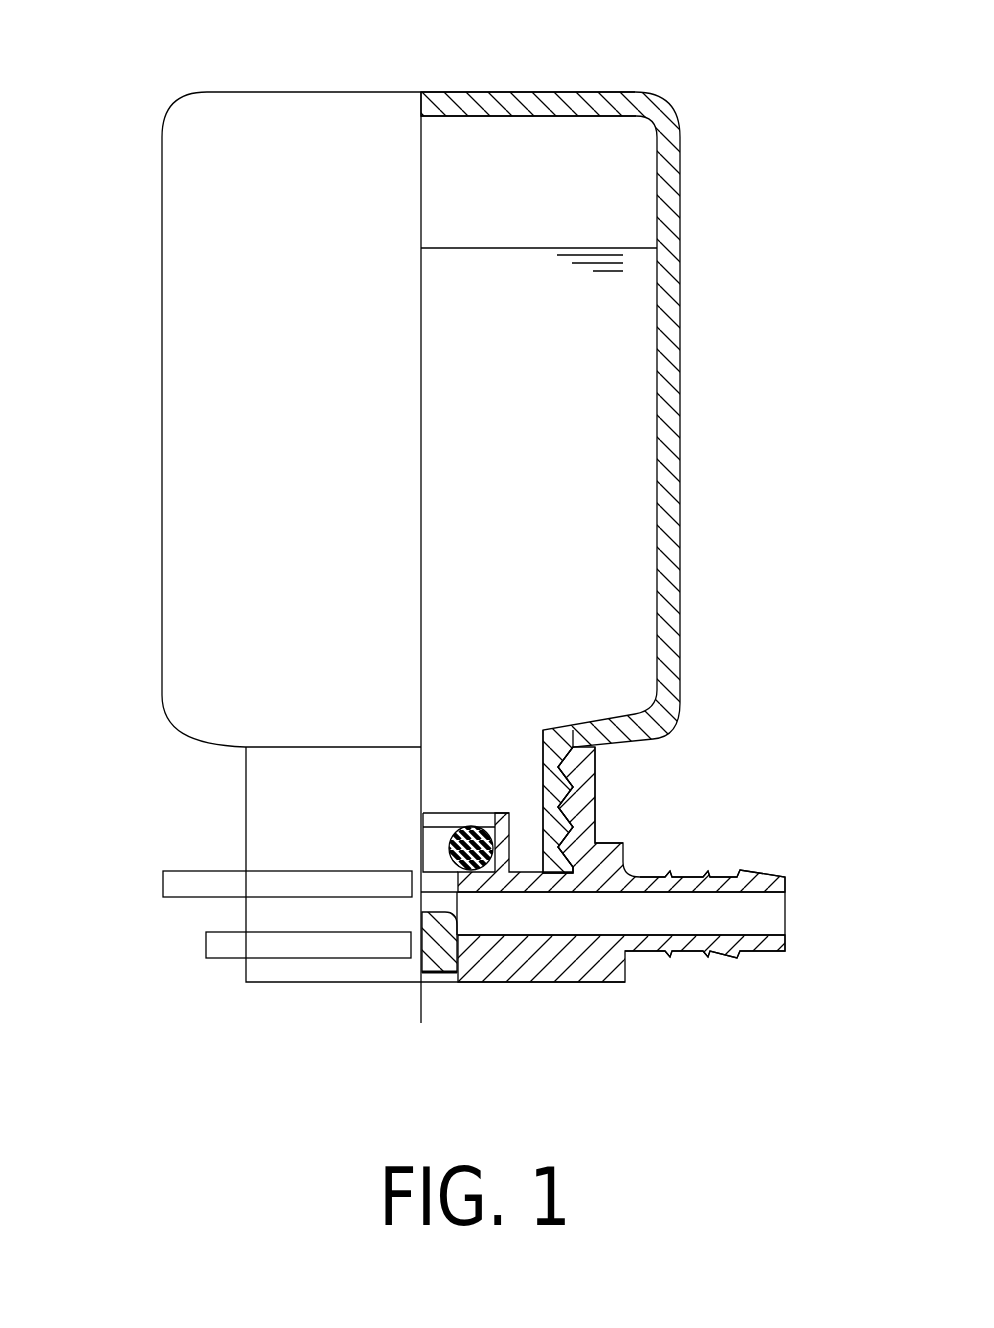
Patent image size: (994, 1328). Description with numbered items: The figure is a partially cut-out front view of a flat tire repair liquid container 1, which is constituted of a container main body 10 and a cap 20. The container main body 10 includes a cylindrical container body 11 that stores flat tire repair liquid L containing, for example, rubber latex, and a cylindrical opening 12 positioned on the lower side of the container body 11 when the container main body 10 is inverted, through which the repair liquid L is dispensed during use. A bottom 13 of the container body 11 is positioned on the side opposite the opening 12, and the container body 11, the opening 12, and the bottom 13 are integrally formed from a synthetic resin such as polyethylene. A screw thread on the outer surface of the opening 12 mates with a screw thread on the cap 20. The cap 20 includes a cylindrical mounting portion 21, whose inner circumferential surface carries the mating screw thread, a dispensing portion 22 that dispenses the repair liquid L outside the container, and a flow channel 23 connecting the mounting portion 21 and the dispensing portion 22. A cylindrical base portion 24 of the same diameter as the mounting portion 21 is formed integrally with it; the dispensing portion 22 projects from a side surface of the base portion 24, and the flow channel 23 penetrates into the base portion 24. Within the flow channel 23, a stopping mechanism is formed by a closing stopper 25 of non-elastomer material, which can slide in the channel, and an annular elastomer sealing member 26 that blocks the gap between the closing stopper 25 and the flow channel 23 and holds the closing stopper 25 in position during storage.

The flat tire repair liquid container 1 is at (431, 543).
The container main body 10 is at (425, 442).
The container body 11 is at (660, 440).
The opening 12 is at (552, 800).
The bottom 13 is at (483, 102).
The flat tire repair liquid L is at (635, 285).
The cap 20 is at (474, 908).
The mounting portion 21 is at (583, 818).
The dispensing portion 22 is at (713, 946).
The flow channel 23 is at (500, 917).
The base portion 24 is at (555, 973).
The closing stopper 25 is at (433, 955).
The sealing member 26 is at (466, 835).